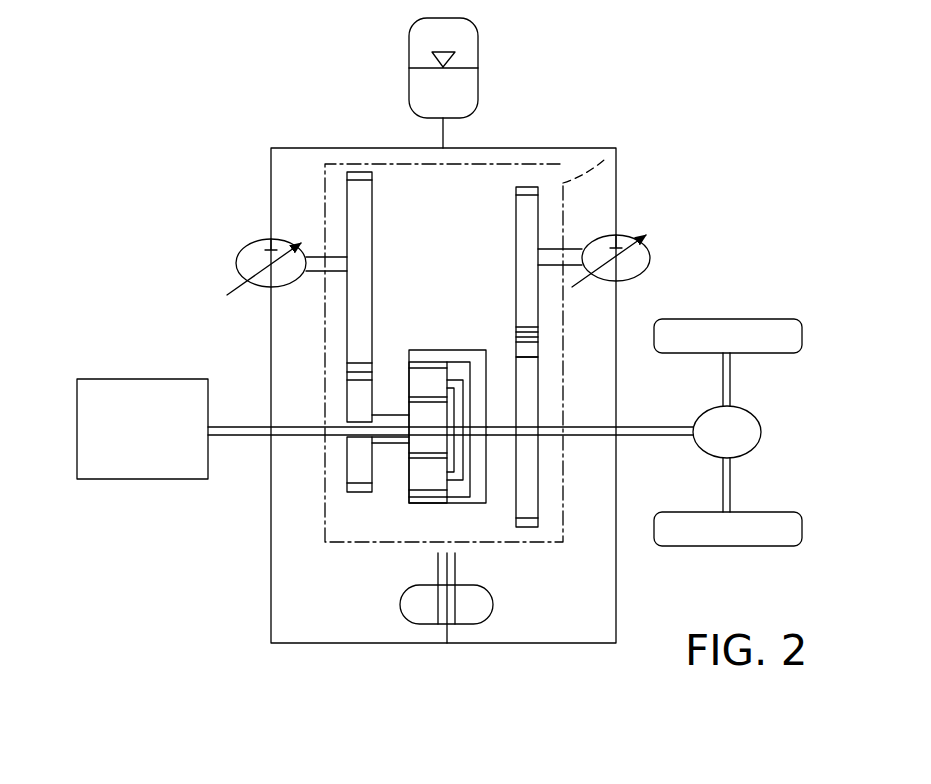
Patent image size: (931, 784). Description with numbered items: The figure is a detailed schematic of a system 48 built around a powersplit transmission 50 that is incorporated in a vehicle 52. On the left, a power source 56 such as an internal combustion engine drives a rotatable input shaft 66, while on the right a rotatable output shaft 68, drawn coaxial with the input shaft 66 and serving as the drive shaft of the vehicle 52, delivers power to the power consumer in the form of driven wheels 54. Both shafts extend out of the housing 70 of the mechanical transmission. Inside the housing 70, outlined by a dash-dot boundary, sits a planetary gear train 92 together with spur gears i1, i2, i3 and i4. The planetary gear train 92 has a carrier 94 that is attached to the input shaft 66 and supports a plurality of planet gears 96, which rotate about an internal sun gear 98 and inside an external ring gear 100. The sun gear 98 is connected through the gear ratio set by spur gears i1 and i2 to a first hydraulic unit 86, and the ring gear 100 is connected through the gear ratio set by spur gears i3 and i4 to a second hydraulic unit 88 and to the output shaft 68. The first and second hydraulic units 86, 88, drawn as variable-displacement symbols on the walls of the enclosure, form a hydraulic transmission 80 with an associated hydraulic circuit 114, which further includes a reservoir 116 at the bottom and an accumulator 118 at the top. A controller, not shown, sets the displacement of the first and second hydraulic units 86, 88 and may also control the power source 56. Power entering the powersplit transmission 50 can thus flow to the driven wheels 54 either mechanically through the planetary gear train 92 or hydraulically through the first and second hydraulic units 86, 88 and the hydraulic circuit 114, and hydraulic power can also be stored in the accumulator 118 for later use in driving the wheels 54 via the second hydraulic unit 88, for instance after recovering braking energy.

The system 48 is at (633, 67).
The powersplit transmission 50 is at (594, 211).
The vehicle 52 is at (147, 257).
The driven wheels 54 is at (777, 335).
The power source 56 is at (123, 395).
The input shaft 66 is at (298, 428).
The output shaft 68 is at (583, 432).
The housing 70 is at (612, 153).
The hydraulic transmission 80 is at (279, 117).
The first hydraulic unit 86 is at (245, 258).
The second hydraulic unit 88 is at (665, 260).
The planetary gear train 92 is at (484, 189).
The carrier 94 is at (458, 452).
The planet gears 96 is at (425, 385).
The sun gear 98 is at (428, 450).
The ring gear 100 is at (460, 358).
The hydraulic circuit 114 is at (276, 142).
The reservoir 116 is at (482, 607).
The accumulator 118 is at (468, 52).
The spur gear i1 is at (355, 452).
The spur gear i2 is at (357, 203).
The spur gear i3 is at (528, 228).
The spur gear i4 is at (525, 490).